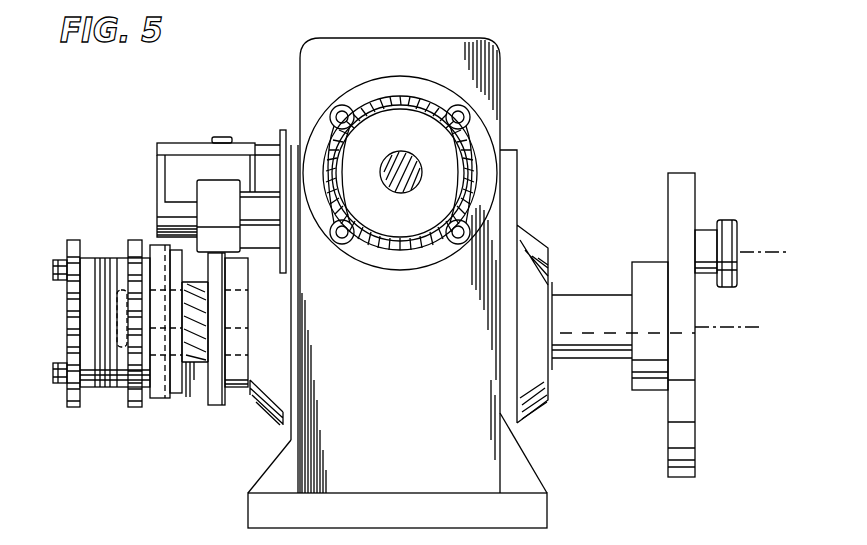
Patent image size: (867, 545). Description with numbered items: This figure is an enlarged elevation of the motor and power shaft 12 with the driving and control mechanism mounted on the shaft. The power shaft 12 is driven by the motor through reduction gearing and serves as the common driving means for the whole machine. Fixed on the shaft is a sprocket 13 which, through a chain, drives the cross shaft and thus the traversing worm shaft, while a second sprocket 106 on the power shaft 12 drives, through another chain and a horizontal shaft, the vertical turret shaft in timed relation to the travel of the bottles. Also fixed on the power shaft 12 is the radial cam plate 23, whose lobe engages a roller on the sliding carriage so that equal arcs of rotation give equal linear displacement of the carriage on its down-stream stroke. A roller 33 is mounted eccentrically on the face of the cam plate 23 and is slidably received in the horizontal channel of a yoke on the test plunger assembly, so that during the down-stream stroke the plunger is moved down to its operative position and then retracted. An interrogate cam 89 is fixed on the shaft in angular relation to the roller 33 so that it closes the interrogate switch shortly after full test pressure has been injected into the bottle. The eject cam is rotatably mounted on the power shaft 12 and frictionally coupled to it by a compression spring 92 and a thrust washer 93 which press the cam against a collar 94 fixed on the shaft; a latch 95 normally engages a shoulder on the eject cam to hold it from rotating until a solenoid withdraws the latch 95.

The sprocket 106 is at (72, 242).
The sprocket 13 is at (135, 242).
The latch 95 is at (223, 233).
The interrogate cam 89 is at (162, 397).
The compression spring 92 is at (193, 360).
The thrust washer 93 is at (215, 388).
The collar 94 is at (235, 377).
The power shaft 12 is at (592, 342).
The radial cam plate 23 is at (687, 435).
The roller 33 is at (728, 227).